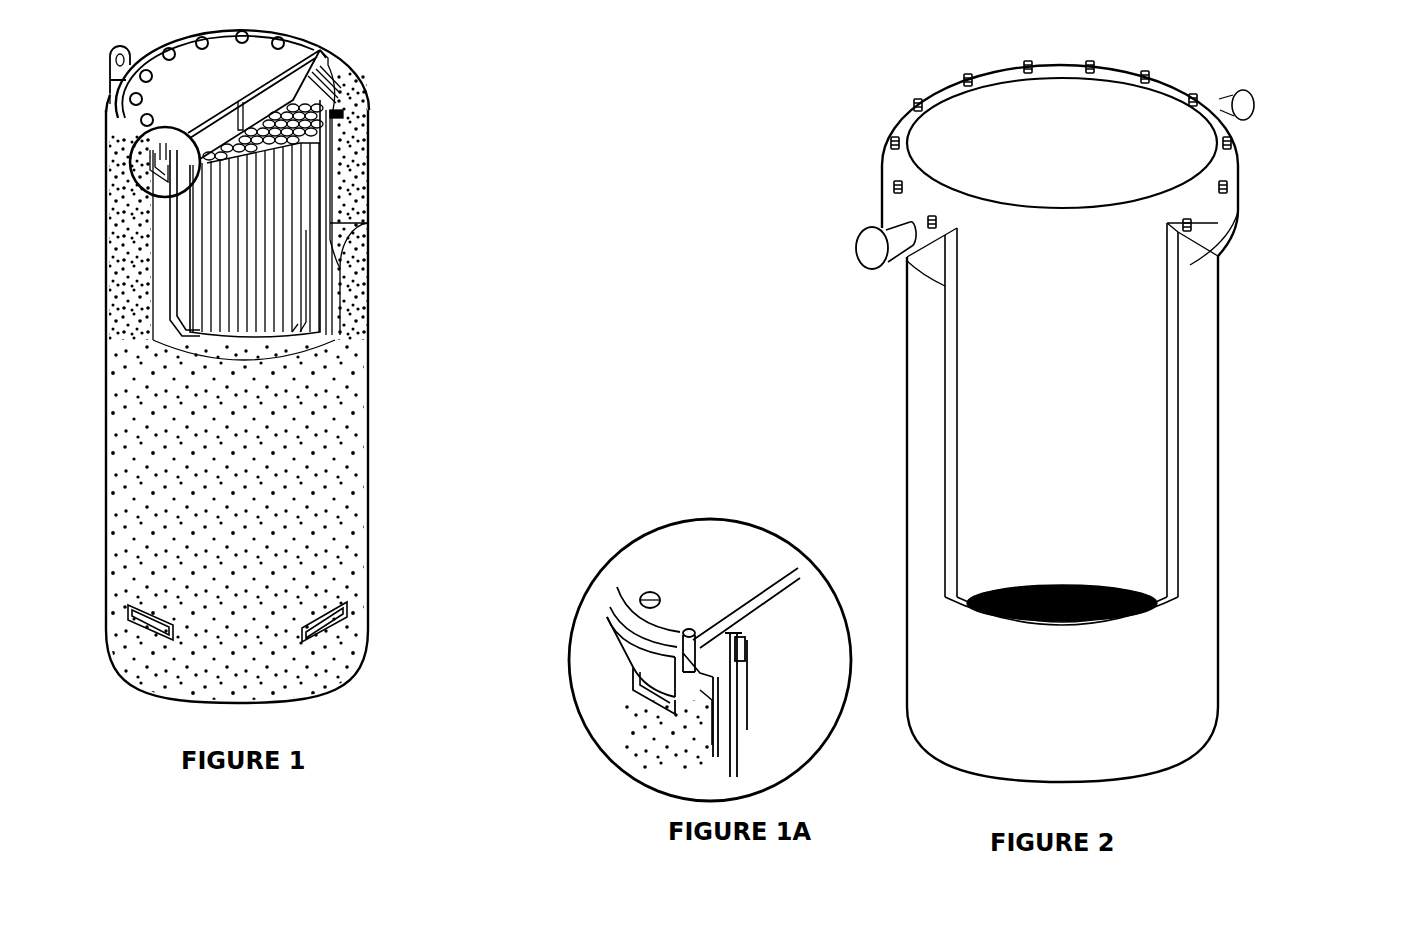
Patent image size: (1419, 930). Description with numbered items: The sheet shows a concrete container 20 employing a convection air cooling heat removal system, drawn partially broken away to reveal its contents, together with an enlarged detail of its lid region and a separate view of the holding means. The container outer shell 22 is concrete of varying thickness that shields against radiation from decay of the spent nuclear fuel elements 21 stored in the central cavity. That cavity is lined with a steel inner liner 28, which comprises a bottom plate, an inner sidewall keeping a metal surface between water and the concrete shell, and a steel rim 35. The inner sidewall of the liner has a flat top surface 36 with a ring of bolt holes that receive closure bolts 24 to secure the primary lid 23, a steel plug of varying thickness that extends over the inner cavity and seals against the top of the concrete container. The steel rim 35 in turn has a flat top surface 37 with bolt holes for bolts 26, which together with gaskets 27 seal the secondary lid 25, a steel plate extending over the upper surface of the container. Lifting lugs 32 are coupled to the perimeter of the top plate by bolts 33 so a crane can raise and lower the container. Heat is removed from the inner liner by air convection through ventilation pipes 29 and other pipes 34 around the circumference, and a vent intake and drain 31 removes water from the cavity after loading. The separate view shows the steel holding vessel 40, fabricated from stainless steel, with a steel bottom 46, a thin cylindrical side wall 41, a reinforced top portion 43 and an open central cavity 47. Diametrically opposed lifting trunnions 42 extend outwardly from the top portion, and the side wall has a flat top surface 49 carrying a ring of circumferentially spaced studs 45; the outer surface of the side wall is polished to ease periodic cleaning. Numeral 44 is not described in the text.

In FIG. 1, the concrete container 20 is at (371, 391).
In FIG. 1, the spent nuclear fuel elements 21 is at (312, 180).
In FIG. 1, the container outer shell 22 is at (334, 308).
In FIG. 1, the primary lid 23 is at (335, 113).
In FIG. 1A, the primary lid 23 is at (752, 685).
In FIG. 1A, the closure bolts 24 is at (737, 647).
In FIG. 1, the secondary lid 25 is at (323, 58).
In FIG. 1A, the secondary lid 25 is at (653, 618).
In FIG. 1A, the bolts 26 is at (683, 653).
In FIG. 1A, the gaskets 27 is at (713, 700).
In FIG. 1, the steel inner liner 28 is at (331, 240).
In FIG. 1, the ventilation pipes 29 is at (348, 626).
In FIG. 1, the vent intake and drain 31 is at (300, 143).
In FIG. 1, the lifting lugs 32 is at (111, 58).
In FIG. 1, the bolts 33 is at (114, 87).
In FIG. 1, the other pipes 34 is at (140, 168).
In FIG. 1A, the other pipes 34 is at (643, 697).
In FIG. 1A, the steel rim 35 is at (653, 655).
In FIG. 1A, the flat top surface 36 is at (735, 640).
In FIG. 1A, the flat top surface 37 is at (686, 636).
In FIG. 2, the steel holding vessel 40 is at (1223, 297).
In FIG. 2, the cylindrical side wall 41 is at (1222, 358).
In FIG. 2, the lifting trunnions 42 is at (856, 253).
In FIG. 2, the reinforced top portion 43 is at (1218, 228).
In FIG. 2, the bolt 44 is at (892, 189).
In FIG. 2, the studs 45 is at (889, 144).
In FIG. 2, the steel bottom 46 is at (1205, 735).
In FIG. 2, the open central cavity 47 is at (1130, 138).
In FIG. 2, the flat top surface 49 is at (948, 95).